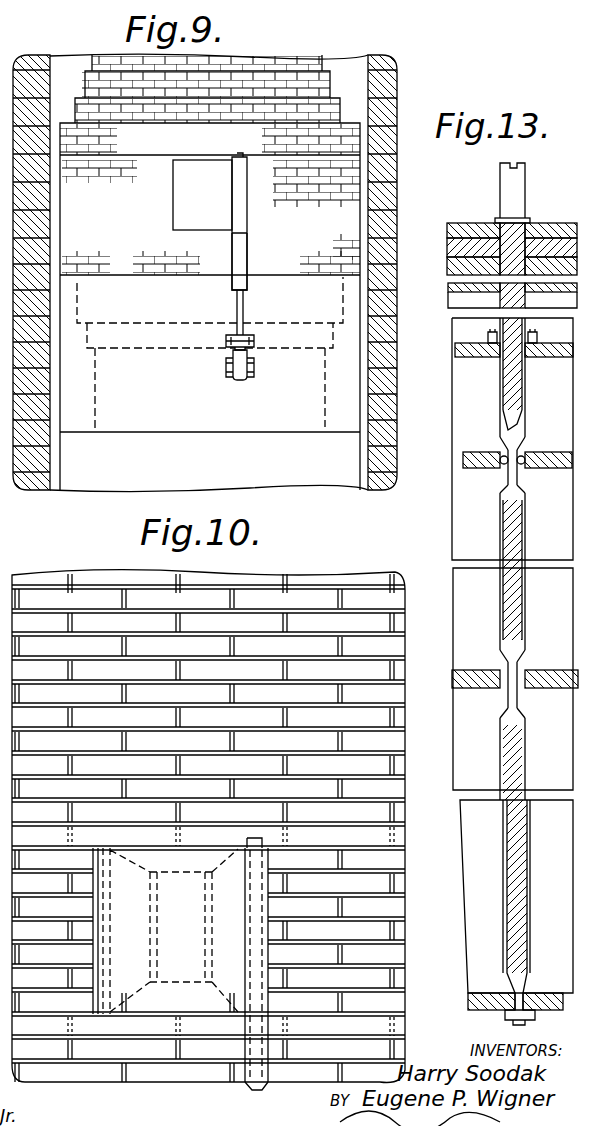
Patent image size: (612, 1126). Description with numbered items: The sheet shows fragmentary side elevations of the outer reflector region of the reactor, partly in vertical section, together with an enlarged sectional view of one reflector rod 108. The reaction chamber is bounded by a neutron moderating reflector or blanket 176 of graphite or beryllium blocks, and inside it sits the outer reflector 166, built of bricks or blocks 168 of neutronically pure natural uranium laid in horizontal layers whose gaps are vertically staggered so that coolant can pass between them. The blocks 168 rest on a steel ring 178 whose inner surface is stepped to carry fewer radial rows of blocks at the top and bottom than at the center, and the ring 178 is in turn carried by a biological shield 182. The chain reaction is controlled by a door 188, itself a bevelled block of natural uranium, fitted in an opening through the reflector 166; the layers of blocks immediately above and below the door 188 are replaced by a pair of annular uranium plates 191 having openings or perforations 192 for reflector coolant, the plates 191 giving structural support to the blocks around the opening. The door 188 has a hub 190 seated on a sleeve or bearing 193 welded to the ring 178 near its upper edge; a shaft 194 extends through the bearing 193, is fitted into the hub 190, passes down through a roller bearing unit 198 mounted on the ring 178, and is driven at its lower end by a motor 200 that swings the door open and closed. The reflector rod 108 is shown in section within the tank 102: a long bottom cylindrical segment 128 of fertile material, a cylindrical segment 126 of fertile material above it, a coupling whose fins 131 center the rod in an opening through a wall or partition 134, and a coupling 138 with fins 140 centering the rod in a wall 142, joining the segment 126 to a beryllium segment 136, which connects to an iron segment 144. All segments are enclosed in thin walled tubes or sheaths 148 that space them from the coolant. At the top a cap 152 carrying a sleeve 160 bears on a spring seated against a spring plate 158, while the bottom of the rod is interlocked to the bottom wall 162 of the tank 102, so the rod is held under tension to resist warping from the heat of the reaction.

In FIG. 13, the tank 102 is at (468, 752).
In FIG. 13, the reflector rod 108 is at (500, 294).
In FIG. 13, the cylindrical segment 126 is at (510, 516).
In FIG. 13, the cylindrical segment 128 is at (517, 903).
In FIG. 13, the fins 131 is at (526, 672).
In FIG. 13, the wall or partition 134 is at (468, 678).
In FIG. 13, the beryllium segment 136 is at (508, 393).
In FIG. 13, the coupling 138 is at (503, 432).
In FIG. 13, the fins 140 is at (521, 456).
In FIG. 13, the wall 142 is at (470, 460).
In FIG. 13, the iron segment 144 is at (500, 327).
In FIG. 13, the tubes or sheaths 148 is at (508, 878).
In FIG. 13, the cap 152 is at (526, 170).
In FIG. 13, the spring plate 158 is at (531, 220).
In FIG. 13, the sleeve 160 is at (526, 195).
In FIG. 13, the bottom wall 162 is at (565, 999).
In FIG. 9, the outer reflector 166 is at (344, 108).
In FIG. 10, the outer reflector 166 is at (90, 568).
In FIG. 10, the bricks or blocks 168 is at (292, 590).
In FIG. 9, the neutron moderating reflector or blanket 176 is at (398, 214).
In FIG. 9, the steel ring 178 is at (340, 383).
In FIG. 9, the biological shield 182 is at (232, 473).
In FIG. 9, the door 188 is at (213, 206).
In FIG. 10, the door 188 is at (196, 943).
In FIG. 9, the hub 190 is at (248, 209).
In FIG. 10, the hub 190 is at (252, 892).
In FIG. 10, the annular uranium plates 191 is at (398, 836).
In FIG. 10, the openings or perforations 192 is at (183, 833).
In FIG. 9, the sleeve or bearing 193 is at (243, 248).
In FIG. 10, the sleeve or bearing 193 is at (262, 1086).
In FIG. 9, the shaft 194 is at (243, 306).
In FIG. 9, the roller bearing unit 198 is at (230, 338).
In FIG. 9, the motor 200 is at (248, 369).